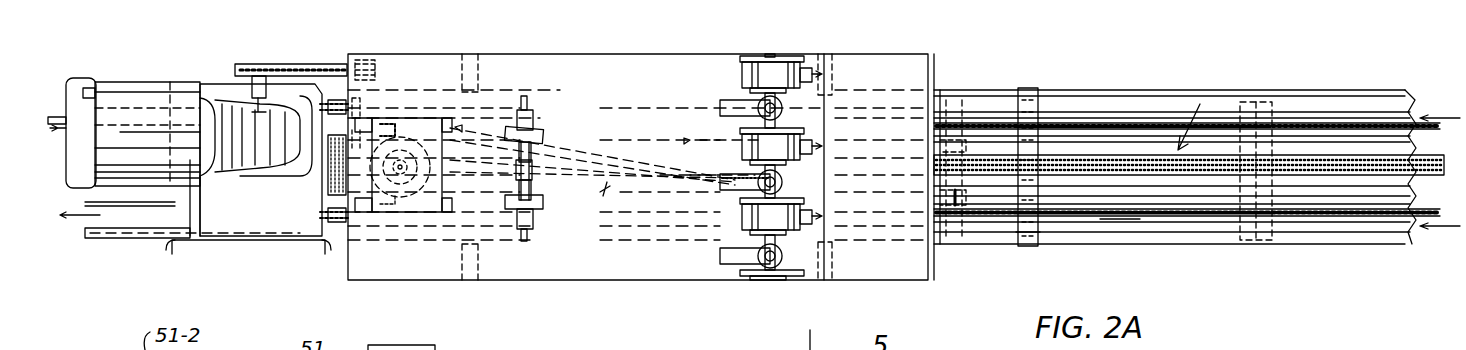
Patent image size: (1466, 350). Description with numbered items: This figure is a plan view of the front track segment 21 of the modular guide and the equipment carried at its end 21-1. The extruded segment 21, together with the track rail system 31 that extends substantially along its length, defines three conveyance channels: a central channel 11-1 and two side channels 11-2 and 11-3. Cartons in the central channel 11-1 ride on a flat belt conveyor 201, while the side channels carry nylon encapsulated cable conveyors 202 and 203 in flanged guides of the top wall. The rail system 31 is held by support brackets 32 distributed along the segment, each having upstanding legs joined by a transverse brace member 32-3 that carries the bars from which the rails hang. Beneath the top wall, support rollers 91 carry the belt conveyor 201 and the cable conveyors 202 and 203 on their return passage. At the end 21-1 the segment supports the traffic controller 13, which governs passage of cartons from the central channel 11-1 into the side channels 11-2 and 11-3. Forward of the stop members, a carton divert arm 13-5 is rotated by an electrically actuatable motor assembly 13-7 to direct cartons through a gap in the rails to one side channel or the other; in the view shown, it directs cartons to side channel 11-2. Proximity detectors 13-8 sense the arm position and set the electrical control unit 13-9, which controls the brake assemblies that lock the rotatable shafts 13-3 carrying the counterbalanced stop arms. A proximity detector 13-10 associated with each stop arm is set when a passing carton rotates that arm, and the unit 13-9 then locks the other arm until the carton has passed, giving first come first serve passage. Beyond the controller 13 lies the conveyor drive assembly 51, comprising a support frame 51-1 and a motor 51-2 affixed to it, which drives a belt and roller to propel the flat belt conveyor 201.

The conveyor drive assembly 51 is at (118, 62).
The motor 51-2 is at (160, 98).
The support frame 51-1 is at (285, 244).
The traffic controller 13 is at (372, 50).
The motor assembly 13-7 is at (427, 212).
The proximity detectors 13-8 is at (538, 130).
The carton divert arm 13-5 is at (588, 212).
The rotatable shafts 13-3 is at (740, 74).
The proximity detector 13-10 is at (722, 106).
The electrical control unit 13-9 is at (880, 276).
The front track segment 21 is at (1104, 85).
The end of front track segment 21-1 is at (938, 96).
The support rollers 91 is at (962, 236).
The support brackets 32 is at (1034, 250).
The transverse brace member 32-3 is at (1014, 234).
The cable conveyor 203 is at (1122, 222).
The flat belt conveyor 201 is at (1198, 170).
The cable conveyor 202 is at (1282, 130).
The track rail system 31 is at (1204, 104).
The side conveyance channel 11-2 is at (1380, 110).
The side conveyance channel 11-3 is at (1290, 224).
The central conveyance channel 11-1 is at (1342, 180).